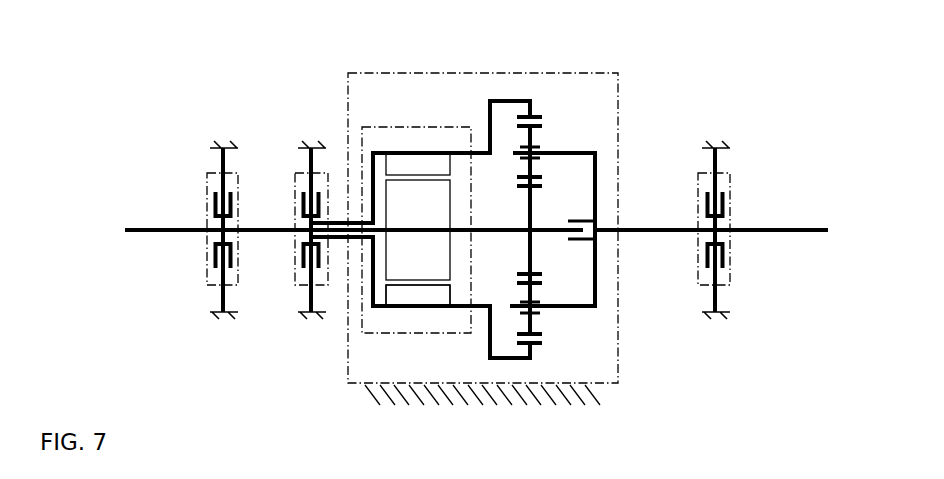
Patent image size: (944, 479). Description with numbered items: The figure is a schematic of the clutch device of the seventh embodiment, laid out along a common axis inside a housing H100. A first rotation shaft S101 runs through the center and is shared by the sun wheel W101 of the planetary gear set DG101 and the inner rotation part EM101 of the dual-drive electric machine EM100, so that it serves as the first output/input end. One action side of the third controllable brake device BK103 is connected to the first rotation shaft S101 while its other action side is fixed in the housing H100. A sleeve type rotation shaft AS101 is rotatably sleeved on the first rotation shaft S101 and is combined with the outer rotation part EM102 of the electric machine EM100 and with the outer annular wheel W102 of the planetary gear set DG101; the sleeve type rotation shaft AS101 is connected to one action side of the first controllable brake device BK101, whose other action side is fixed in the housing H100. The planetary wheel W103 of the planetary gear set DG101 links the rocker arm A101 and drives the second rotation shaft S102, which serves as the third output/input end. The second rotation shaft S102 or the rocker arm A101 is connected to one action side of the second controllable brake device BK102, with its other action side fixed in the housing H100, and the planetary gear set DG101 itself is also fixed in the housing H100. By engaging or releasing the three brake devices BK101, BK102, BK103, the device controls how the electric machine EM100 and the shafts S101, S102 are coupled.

The first rotation shaft S101 is at (163, 228).
The second rotation shaft S102 is at (778, 228).
The first controllable brake device BK101 is at (297, 185).
The second controllable brake device BK102 is at (732, 188).
The third controllable brake device BK103 is at (207, 188).
The sleeve type rotation shaft AS101 is at (337, 221).
The dual-drive electric machine EM100 is at (383, 127).
The inner rotation part of electric machine EM101 is at (412, 203).
The outer rotation part of electric machine EM102 is at (417, 292).
The planetary gear set DG101 is at (580, 74).
The sun wheel W101 is at (532, 252).
The outer annular wheel W102 is at (542, 117).
The planetary wheel W103 is at (580, 110).
The rocker arm A101 is at (597, 182).
The housing H100 is at (760, 357).